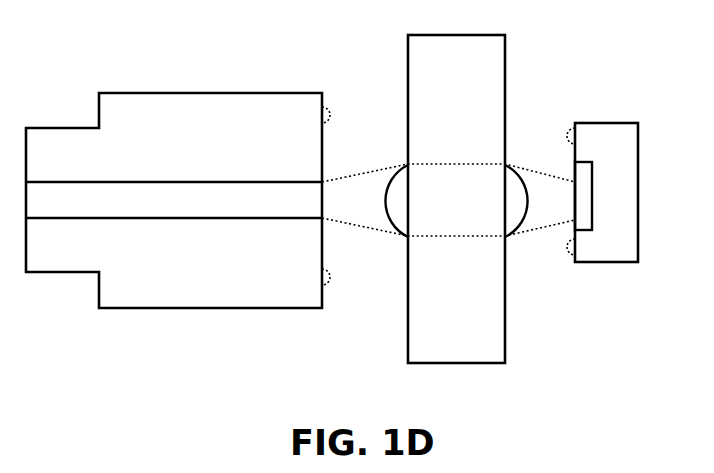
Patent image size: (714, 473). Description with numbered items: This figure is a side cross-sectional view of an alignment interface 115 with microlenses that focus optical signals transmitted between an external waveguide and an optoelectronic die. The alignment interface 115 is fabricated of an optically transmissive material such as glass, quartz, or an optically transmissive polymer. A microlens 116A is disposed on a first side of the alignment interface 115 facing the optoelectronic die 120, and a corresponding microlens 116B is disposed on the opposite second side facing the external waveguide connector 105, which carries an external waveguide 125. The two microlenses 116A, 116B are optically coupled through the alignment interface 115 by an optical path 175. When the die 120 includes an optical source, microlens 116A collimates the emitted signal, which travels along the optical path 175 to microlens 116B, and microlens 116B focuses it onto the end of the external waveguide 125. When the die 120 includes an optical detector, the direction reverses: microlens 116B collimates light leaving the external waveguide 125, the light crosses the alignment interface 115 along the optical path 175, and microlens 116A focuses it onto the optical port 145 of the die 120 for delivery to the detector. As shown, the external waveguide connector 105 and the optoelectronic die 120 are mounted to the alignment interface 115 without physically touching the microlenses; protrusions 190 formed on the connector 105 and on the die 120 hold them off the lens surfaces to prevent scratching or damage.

The external waveguide connector 105 is at (220, 124).
The external waveguide 125 is at (220, 211).
The alignment interface 115 is at (472, 69).
The microlens 116A is at (526, 224).
The microlens 116B is at (388, 224).
The optical path 175 is at (468, 164).
The optoelectronic die 120 is at (627, 252).
The optical port 145 is at (592, 172).
The protrusion 190 is at (325, 104).